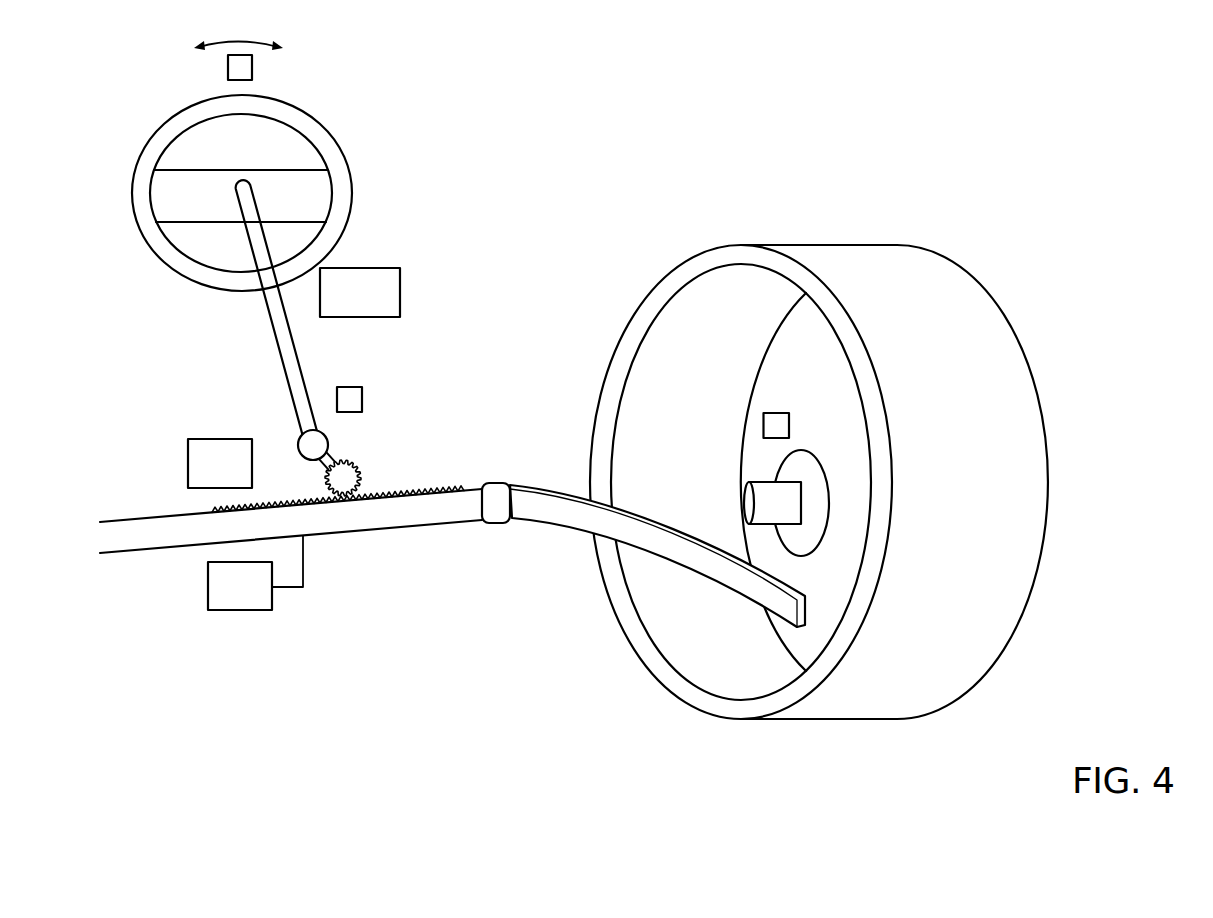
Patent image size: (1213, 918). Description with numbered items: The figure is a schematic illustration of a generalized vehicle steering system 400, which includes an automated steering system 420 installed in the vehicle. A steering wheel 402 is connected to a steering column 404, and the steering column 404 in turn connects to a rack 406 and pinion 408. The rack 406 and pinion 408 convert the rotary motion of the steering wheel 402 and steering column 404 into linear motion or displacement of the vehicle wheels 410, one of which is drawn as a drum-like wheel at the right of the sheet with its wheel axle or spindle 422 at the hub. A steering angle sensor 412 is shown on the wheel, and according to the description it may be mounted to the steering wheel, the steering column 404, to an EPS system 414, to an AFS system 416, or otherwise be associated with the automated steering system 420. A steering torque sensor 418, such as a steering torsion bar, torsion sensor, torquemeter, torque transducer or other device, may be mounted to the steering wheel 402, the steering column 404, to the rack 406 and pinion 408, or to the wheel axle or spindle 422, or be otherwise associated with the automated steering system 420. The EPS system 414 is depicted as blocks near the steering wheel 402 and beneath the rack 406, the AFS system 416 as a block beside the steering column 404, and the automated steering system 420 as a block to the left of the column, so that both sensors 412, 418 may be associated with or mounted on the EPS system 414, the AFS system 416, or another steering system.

The vehicle steering system 400 is at (933, 105).
The steering wheel 402 is at (348, 151).
The steering column 404 is at (273, 335).
The rack 406 is at (353, 515).
The pinion 408 is at (362, 469).
The vehicle wheels 410 is at (852, 249).
The steering angle sensor 412 is at (763, 427).
The EPS system 414 is at (253, 67).
The AFS system 416 is at (400, 288).
The steering torque sensor 418 is at (362, 395).
The automated steering system 420 is at (218, 438).
The wheel axle or spindle 422 is at (795, 508).